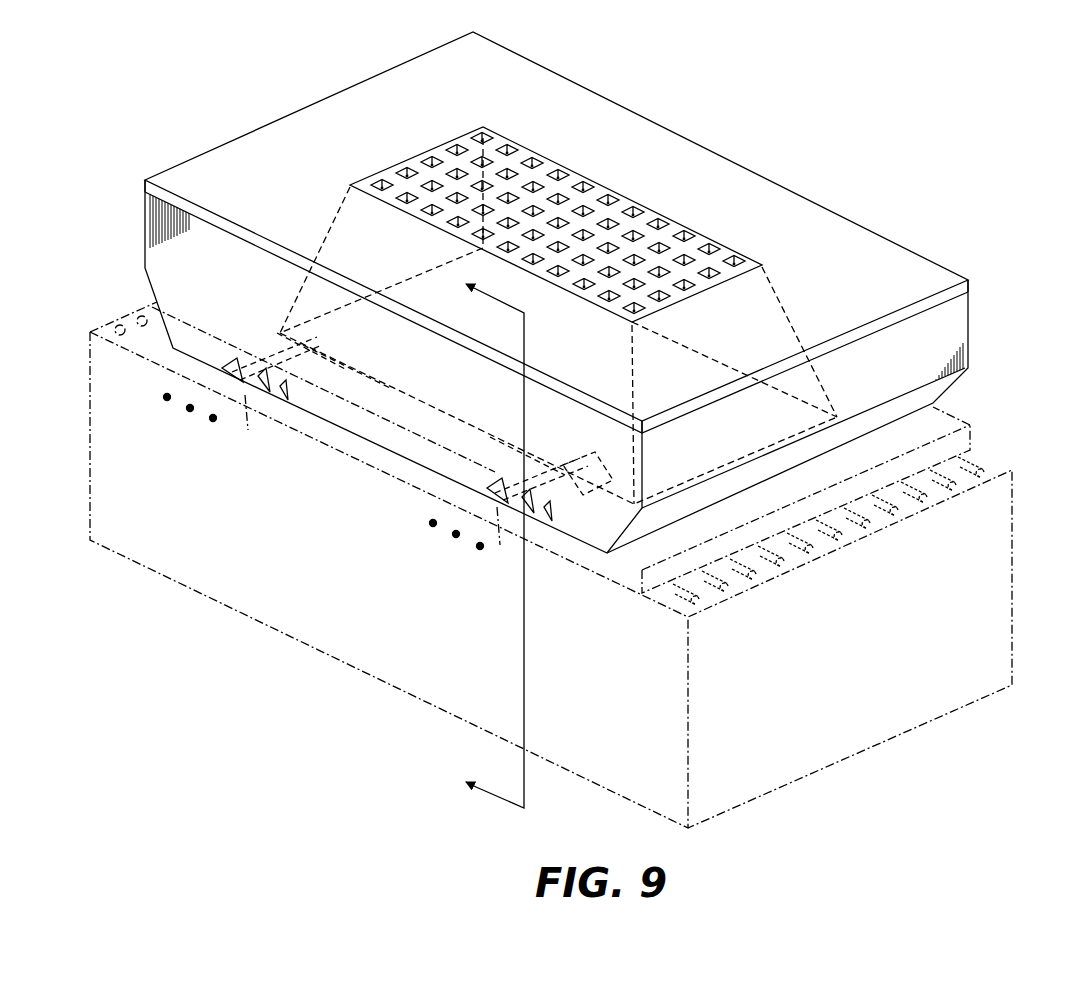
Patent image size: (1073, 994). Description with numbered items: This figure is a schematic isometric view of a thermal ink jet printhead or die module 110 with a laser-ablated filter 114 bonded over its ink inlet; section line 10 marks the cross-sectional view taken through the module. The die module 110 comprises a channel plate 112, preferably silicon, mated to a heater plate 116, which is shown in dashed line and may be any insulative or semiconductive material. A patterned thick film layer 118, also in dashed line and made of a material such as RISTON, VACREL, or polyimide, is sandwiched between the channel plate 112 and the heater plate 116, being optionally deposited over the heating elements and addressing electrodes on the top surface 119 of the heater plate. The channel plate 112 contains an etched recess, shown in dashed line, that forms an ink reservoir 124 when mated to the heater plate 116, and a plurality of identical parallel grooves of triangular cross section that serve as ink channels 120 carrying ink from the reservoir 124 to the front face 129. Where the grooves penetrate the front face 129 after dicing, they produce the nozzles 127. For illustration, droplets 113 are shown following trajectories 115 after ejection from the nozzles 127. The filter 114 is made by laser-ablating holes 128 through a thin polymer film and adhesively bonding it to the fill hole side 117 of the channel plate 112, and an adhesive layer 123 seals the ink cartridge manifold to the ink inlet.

The section line 10 is at (473, 538).
The die module printhead 110 is at (750, 128).
The channel plate 112 is at (977, 323).
The droplets 113 is at (167, 397).
The laser ablated filter 114 is at (353, 108).
The trajectories 115 is at (503, 582).
The heater plate 116 is at (1018, 578).
The fill hole side 117 is at (213, 167).
The patterned thick film layer 118 is at (972, 440).
The top surface of the heater plate 119 is at (93, 330).
The ink channels 120 is at (566, 467).
The adhesive layer 123 is at (765, 195).
The ink reservoir 124 is at (783, 320).
The nozzles 127 is at (256, 372).
The holes 128 is at (583, 193).
The front face 129 is at (158, 248).